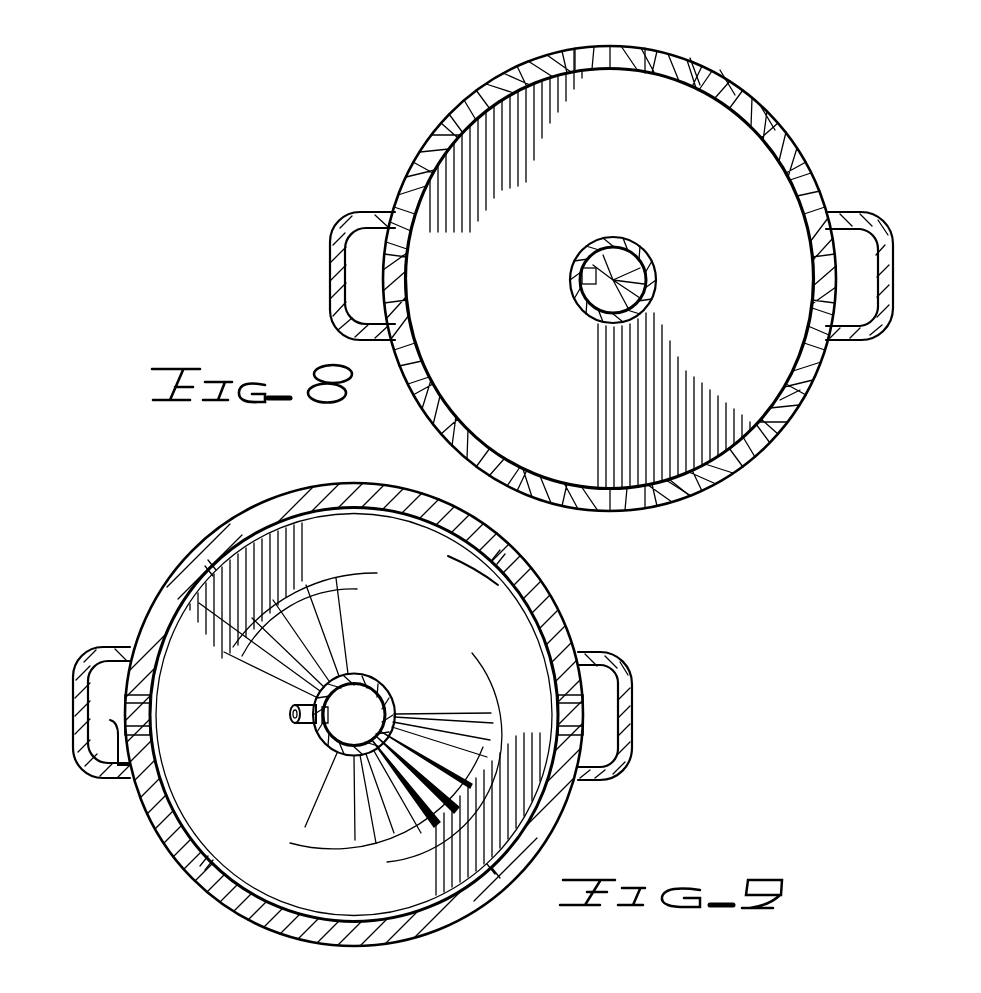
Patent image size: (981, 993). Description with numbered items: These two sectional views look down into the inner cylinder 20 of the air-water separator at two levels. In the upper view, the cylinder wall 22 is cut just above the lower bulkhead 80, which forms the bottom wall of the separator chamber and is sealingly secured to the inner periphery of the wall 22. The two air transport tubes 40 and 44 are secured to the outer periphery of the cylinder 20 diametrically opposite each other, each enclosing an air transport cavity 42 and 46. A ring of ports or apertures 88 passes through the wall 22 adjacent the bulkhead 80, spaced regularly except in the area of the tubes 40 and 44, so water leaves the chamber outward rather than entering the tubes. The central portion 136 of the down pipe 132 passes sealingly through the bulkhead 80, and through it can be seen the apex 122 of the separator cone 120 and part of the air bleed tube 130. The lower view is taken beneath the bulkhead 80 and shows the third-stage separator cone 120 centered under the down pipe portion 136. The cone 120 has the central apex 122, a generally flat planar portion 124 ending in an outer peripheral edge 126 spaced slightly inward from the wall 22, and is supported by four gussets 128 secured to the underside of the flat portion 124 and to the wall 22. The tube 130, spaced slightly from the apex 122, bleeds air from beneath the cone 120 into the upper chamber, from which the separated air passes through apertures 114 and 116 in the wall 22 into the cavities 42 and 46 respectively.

In FIG. 8, the inner cylinder 20 is at (452, 100).
In FIG. 9, the inner cylinder 20 is at (234, 512).
In FIG. 8, the cylinder wall 22 is at (517, 72).
In FIG. 9, the cylinder wall 22 is at (563, 606).
In FIG. 8, the air transport tube 40 is at (903, 290).
In FIG. 9, the air transport tube 40 is at (625, 664).
In FIG. 8, the air transport cavity 42 is at (858, 248).
In FIG. 9, the air transport cavity 42 is at (608, 733).
In FIG. 8, the air transport tube 44 is at (340, 240).
In FIG. 9, the air transport tube 44 is at (95, 652).
In FIG. 8, the air transport cavity 46 is at (358, 272).
In FIG. 9, the air transport cavity 46 is at (102, 742).
In FIG. 8, the lower bulkhead 80 is at (722, 122).
In FIG. 8, the apertures 88 is at (632, 47).
In FIG. 9, the aperture 114 is at (583, 716).
In FIG. 9, the aperture 116 is at (118, 780).
In FIG. 8, the separator cone 120 is at (617, 262).
In FIG. 9, the separator cone 120 is at (407, 553).
In FIG. 8, the apex 122 is at (650, 282).
In FIG. 9, the apex 122 is at (382, 710).
In FIG. 9, the flat planar portion 124 is at (170, 838).
In FIG. 9, the outer peripheral edge 126 is at (465, 540).
In FIG. 9, the gussets 128 is at (212, 565).
In FIG. 8, the air bleed tube 130 is at (580, 279).
In FIG. 9, the air bleed tube 130 is at (305, 703).
In FIG. 8, the down pipe 132 is at (578, 252).
In FIG. 8, the central portion of down pipe 136 is at (652, 262).
In FIG. 9, the central portion of down pipe 136 is at (373, 678).